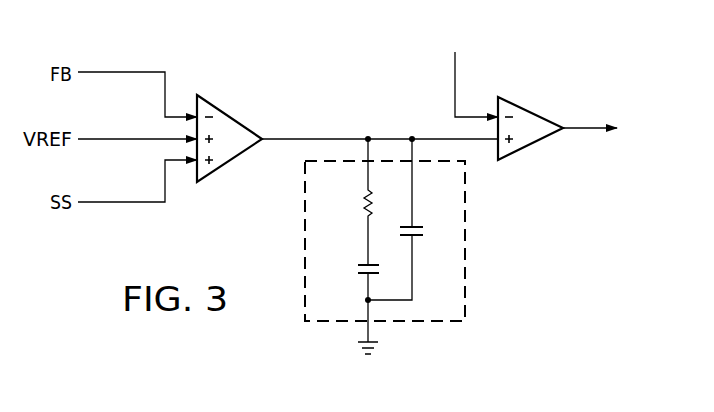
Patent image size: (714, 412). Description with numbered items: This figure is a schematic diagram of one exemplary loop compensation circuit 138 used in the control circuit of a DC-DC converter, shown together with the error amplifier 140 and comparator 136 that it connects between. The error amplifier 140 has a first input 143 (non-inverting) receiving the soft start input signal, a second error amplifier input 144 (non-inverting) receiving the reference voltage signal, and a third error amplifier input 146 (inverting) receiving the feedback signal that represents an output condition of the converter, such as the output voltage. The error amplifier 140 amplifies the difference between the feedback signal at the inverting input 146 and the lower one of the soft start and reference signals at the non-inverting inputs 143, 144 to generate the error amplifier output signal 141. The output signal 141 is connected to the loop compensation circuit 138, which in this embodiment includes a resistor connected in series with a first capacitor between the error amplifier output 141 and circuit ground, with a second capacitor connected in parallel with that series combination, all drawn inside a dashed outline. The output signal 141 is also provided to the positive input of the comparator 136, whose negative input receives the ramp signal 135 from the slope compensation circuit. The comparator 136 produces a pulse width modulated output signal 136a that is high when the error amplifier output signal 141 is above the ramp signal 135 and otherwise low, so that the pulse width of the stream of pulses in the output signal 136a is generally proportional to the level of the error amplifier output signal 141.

The third error amplifier input 146 is at (133, 72).
The second error amplifier input 144 is at (122, 139).
The first input 143 is at (133, 202).
The error amplifier 140 is at (231, 113).
The error amplifier output signal 141 is at (324, 138).
The ramp signal 135 is at (455, 85).
The comparator 136 is at (531, 108).
The pulse width modulated output signal 136a is at (585, 130).
The loop compensation circuit 138 is at (468, 243).